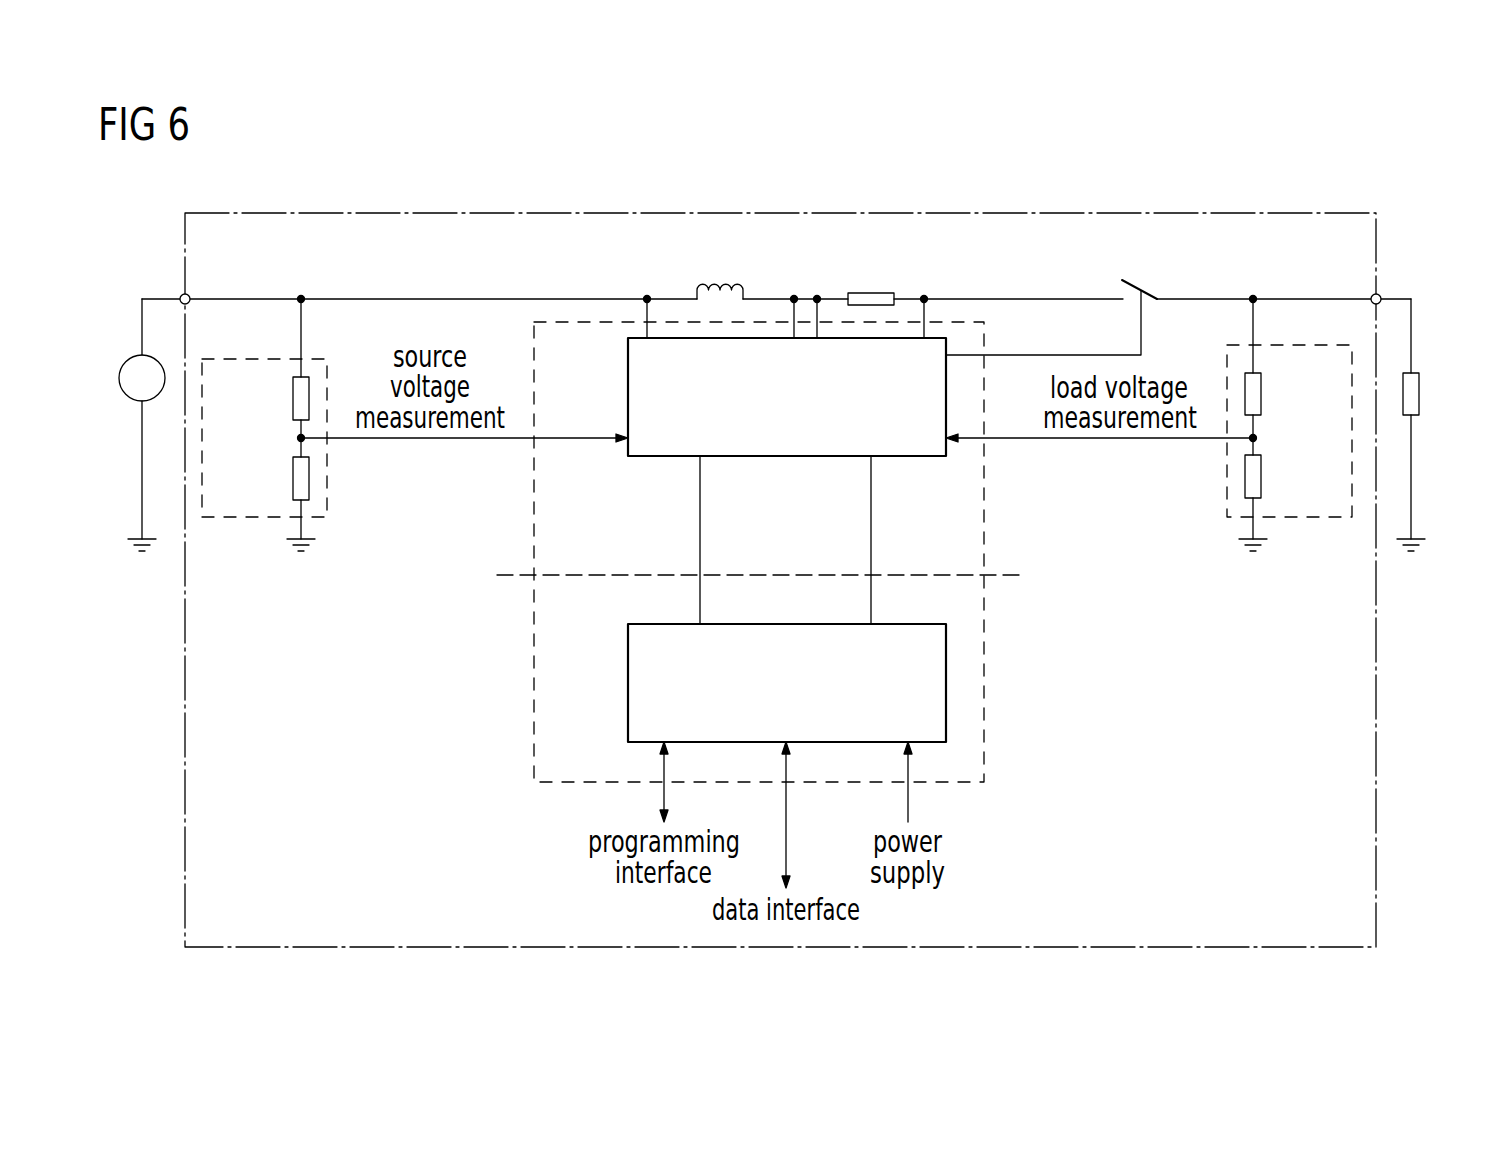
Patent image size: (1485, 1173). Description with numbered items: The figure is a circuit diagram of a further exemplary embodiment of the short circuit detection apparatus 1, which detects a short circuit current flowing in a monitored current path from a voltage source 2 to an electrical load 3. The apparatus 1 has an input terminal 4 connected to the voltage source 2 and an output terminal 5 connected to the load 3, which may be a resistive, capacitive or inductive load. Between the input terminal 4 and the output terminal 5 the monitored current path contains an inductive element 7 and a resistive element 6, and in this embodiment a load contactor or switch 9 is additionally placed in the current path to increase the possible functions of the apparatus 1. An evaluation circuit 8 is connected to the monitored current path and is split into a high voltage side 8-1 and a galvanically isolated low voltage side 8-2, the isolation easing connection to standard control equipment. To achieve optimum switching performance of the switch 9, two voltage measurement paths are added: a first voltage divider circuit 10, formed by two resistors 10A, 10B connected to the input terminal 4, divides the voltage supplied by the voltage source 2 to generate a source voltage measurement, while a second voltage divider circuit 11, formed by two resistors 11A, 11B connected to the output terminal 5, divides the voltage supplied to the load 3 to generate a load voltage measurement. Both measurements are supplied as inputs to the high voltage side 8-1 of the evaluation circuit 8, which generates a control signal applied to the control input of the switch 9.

The short circuit detection apparatus 1 is at (785, 212).
The voltage source 2 is at (127, 361).
The electrical load 3 is at (1420, 395).
The input terminal 4 is at (190, 296).
The output terminal 5 is at (1382, 295).
The resistive element 6 is at (886, 293).
The inductive element 7 is at (740, 281).
The evaluation circuit 8 is at (768, 552).
The high voltage side 8-1 is at (628, 375).
The low voltage side 8-2 is at (628, 684).
The switch 9 is at (1152, 293).
The first voltage divider circuit 10 is at (296, 444).
The resistor 10A is at (293, 398).
The resistor 10B is at (293, 478).
The second voltage divider circuit 11 is at (1258, 444).
The resistor 11A is at (1262, 395).
The resistor 11B is at (1262, 478).